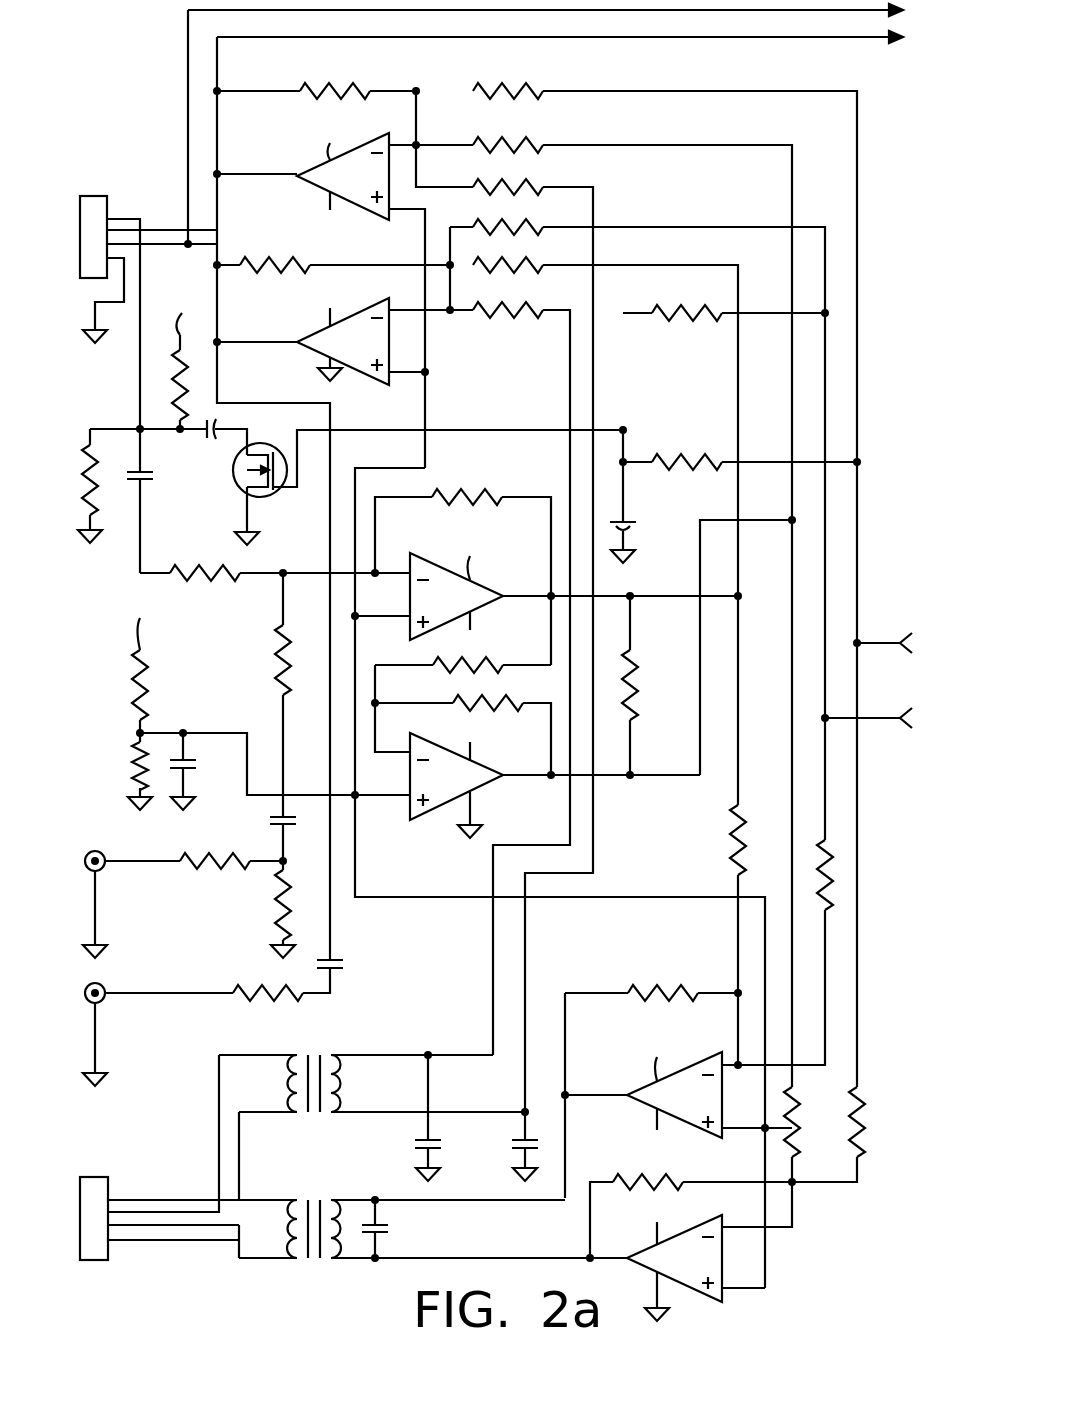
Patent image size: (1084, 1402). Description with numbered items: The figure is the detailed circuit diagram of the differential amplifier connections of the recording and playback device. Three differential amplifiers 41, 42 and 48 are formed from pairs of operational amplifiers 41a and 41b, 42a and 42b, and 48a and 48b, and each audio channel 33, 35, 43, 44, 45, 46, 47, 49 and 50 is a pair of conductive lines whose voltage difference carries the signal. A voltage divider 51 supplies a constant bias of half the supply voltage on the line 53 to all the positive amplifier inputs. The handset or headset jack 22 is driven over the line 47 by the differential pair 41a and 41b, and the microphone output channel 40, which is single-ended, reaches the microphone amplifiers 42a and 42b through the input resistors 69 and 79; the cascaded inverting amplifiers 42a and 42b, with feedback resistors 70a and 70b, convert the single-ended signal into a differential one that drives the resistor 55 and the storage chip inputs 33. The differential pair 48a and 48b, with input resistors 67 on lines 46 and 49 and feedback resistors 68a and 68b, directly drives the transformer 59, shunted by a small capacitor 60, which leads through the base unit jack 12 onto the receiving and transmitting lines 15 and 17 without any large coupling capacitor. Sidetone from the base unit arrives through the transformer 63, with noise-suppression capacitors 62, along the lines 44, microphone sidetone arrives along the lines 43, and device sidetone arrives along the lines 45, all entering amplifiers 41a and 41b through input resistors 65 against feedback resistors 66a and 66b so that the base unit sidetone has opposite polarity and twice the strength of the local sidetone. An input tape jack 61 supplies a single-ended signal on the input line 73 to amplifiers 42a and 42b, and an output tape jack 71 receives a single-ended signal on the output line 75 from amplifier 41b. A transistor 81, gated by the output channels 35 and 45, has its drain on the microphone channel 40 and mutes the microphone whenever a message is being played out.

The modular jack 12 is at (95, 1177).
The receiving line 15 is at (135, 1225).
The transmitting line 17 is at (178, 1240).
The modular jack 22 is at (93, 196).
The inputs of the storage chip 33 is at (866, 13).
The output channel 35 is at (880, 716).
The microphone output channel 40 is at (140, 397).
The differential amplifier 41 is at (170, 61).
The operational amplifier 41a is at (298, 172).
The operational amplifier 41b is at (298, 338).
The differential amplifier 42 is at (438, 848).
The operational amplifier 42a is at (422, 556).
The operational amplifier 42b is at (492, 785).
The lines 43 is at (765, 262).
The lines 44 is at (446, 312).
The lines 45 is at (857, 232).
The lines 46 is at (792, 765).
The line 47 is at (160, 244).
The differential amplifier 48 is at (620, 954).
The operational amplifier 48a is at (637, 1083).
The operational amplifier 48b is at (640, 1246).
The lines 49 is at (858, 792).
The audio channel 50 is at (532, 1258).
The voltage divider 51 is at (104, 716).
The bias line 53 is at (302, 795).
The resistor 55 is at (640, 680).
The transformer 59 is at (292, 1237).
The capacitor 60 is at (390, 1228).
The input tape jack 61 is at (95, 851).
The capacitors 62 is at (512, 1148).
The transformer 63 is at (348, 1090).
The input resistors 65 is at (552, 310).
The feedback resistor 66a is at (352, 84).
The feedback resistor 66b is at (290, 258).
The input resistors 67 is at (745, 840).
The feedback resistor 68a is at (668, 985).
The feedback resistor 68b is at (610, 1175).
The input resistor 69 is at (214, 583).
The feedback resistor 70a is at (470, 490).
The feedback resistor 70b is at (495, 712).
The output tape jack 71 is at (100, 982).
The input line 73 is at (130, 858).
The output line 75 is at (172, 993).
The input resistor 79 is at (290, 640).
The transistor 81 is at (238, 486).